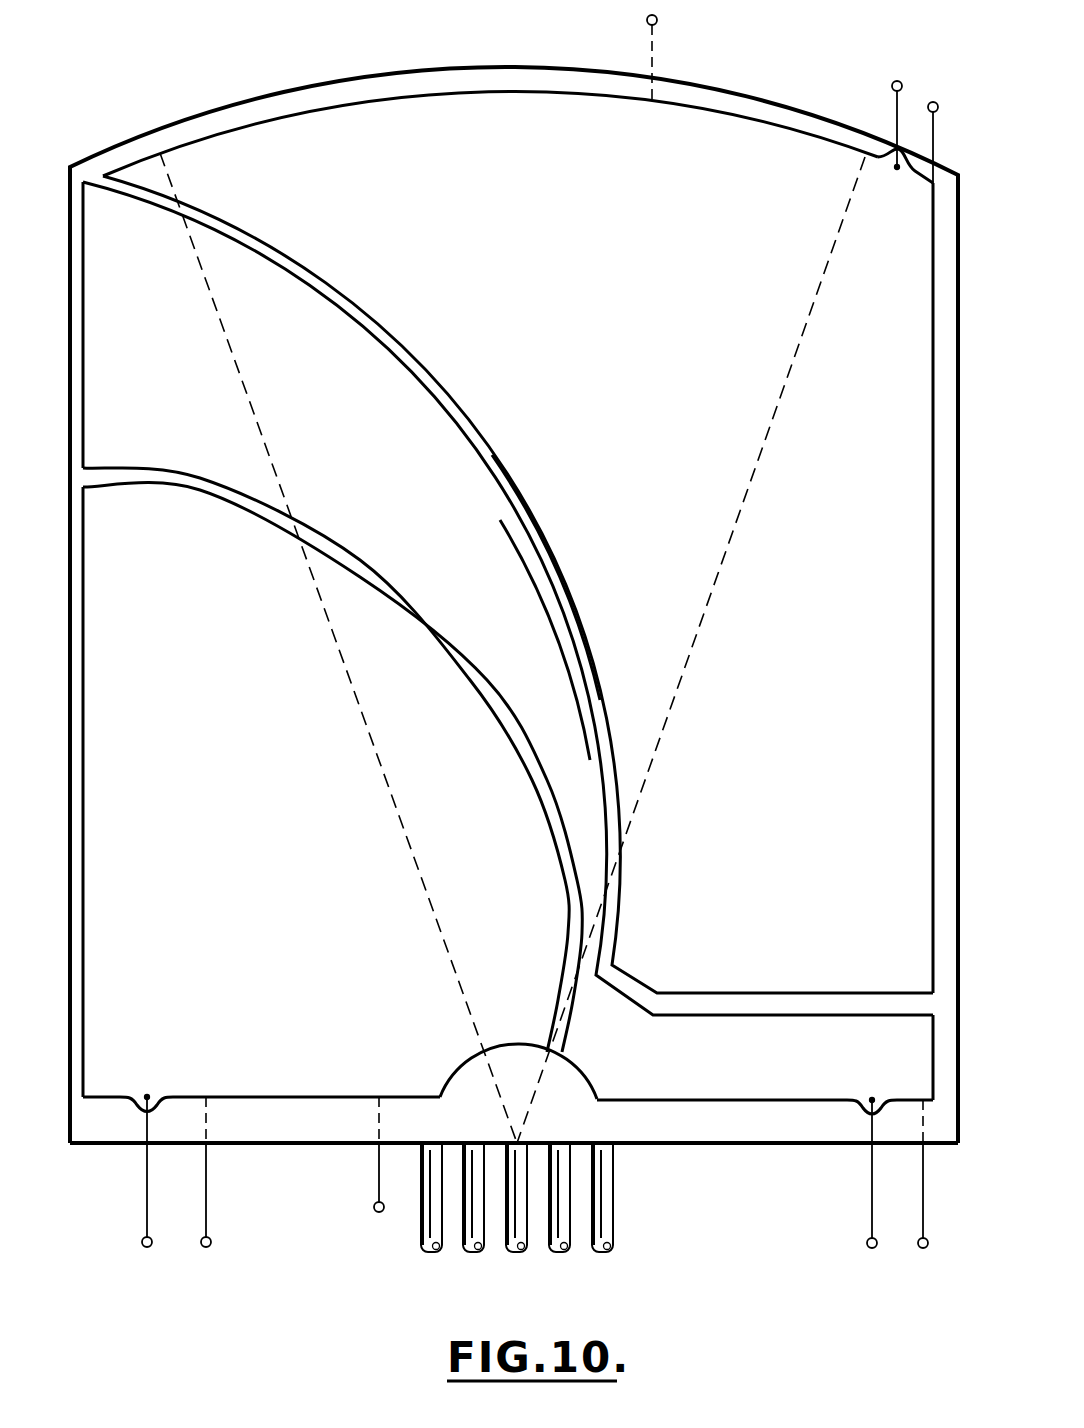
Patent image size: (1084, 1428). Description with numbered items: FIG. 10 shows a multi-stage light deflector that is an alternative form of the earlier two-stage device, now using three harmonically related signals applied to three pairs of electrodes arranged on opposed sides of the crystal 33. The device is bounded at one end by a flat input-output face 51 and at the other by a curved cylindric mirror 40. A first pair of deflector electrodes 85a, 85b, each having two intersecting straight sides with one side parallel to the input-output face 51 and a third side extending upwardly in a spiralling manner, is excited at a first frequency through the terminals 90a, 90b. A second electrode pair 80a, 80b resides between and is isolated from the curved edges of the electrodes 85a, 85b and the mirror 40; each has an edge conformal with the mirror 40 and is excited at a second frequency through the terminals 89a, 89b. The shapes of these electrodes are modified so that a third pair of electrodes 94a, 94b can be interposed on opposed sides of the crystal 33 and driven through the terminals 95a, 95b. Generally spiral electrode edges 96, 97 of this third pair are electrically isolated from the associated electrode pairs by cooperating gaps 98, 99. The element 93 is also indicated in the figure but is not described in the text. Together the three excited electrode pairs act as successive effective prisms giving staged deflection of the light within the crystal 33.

The cylindric mirror 40 is at (270, 95).
The input-output face 51 is at (767, 1145).
The crystal 33 is at (310, 1120).
The bottom border region right 93 is at (707, 1077).
The second electrode 80a is at (383, 120).
The second electrode 80b is at (655, 40).
The terminal 89a is at (892, 86).
The terminal 89b is at (934, 102).
The spiral electrode edge 96 is at (385, 350).
The gap 98 is at (443, 413).
The spiral electrode edge 97 is at (366, 563).
The gap 99 is at (200, 487).
The third electrode 94a is at (512, 563).
The third electrode 94b is at (545, 638).
The deflector electrode 85a is at (127, 1065).
The deflector electrode 85b is at (379, 1212).
The terminal 90a is at (147, 1247).
The terminal 90b is at (211, 1242).
The terminal 95a is at (867, 1243).
The terminal 95b is at (923, 1248).